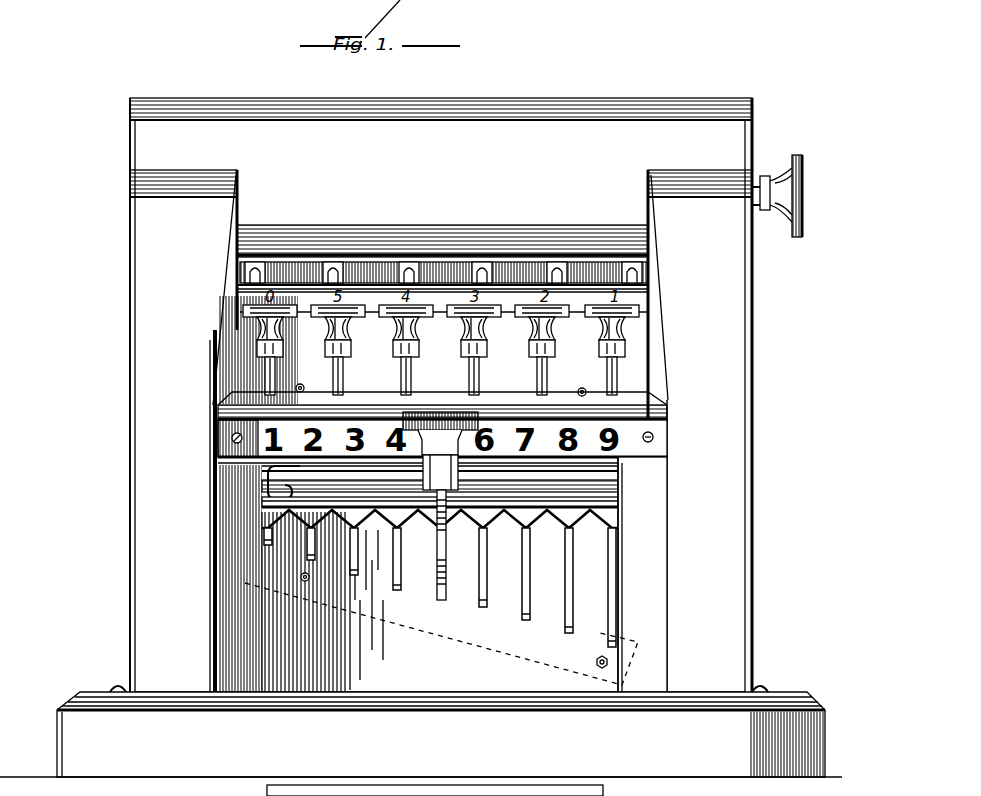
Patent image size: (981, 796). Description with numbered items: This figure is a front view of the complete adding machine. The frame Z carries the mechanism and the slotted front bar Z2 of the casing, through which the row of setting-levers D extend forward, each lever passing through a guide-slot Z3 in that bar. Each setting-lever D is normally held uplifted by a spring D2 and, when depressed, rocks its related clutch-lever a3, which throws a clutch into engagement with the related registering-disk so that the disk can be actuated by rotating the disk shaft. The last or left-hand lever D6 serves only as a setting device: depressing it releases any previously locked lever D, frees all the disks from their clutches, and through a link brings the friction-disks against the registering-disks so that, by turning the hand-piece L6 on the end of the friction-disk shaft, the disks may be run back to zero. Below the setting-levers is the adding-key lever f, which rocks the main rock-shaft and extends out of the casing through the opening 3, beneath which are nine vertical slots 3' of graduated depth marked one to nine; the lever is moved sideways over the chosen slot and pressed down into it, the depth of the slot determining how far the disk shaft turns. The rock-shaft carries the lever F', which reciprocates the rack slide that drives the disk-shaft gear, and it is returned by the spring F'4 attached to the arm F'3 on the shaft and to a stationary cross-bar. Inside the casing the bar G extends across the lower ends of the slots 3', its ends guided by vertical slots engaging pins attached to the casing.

The frame Z is at (165, 431).
The hand-piece L6 is at (805, 220).
The setting-lever D is at (634, 345).
The setting-lever D6 is at (266, 363).
The clutch-lever a3 is at (340, 372).
The slotted front bar Z2 is at (416, 350).
The guide-slots Z3 is at (483, 352).
The spring D2 is at (554, 350).
The spring F'4 is at (440, 480).
The arm F'3 is at (440, 494).
The lever F' is at (440, 494).
The adding-key lever f is at (448, 497).
The opening 3 is at (636, 574).
The vertical slots 3' is at (414, 577).
The bar G is at (607, 634).